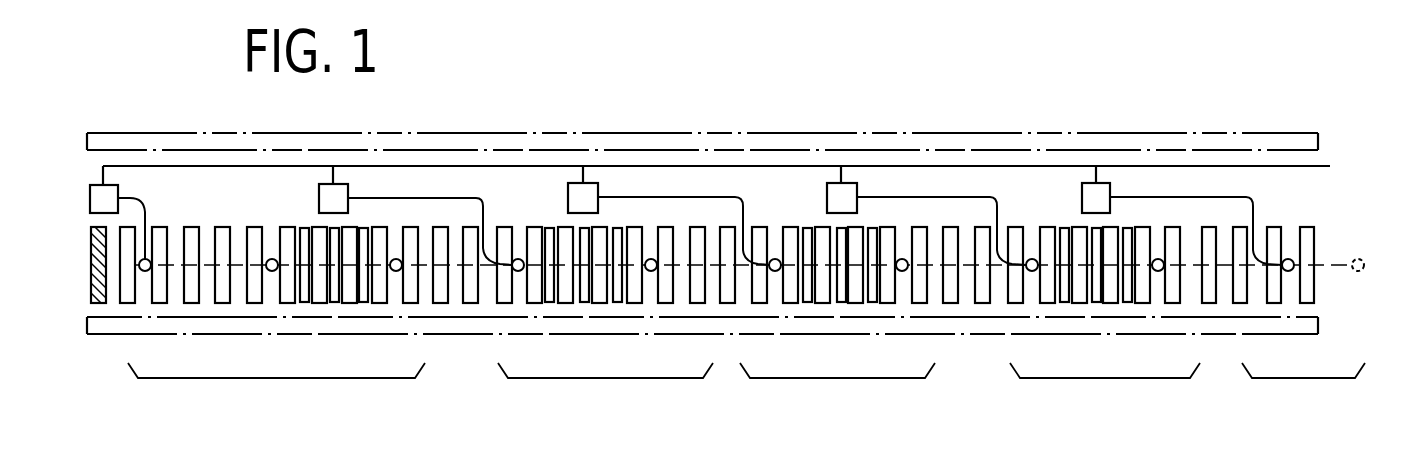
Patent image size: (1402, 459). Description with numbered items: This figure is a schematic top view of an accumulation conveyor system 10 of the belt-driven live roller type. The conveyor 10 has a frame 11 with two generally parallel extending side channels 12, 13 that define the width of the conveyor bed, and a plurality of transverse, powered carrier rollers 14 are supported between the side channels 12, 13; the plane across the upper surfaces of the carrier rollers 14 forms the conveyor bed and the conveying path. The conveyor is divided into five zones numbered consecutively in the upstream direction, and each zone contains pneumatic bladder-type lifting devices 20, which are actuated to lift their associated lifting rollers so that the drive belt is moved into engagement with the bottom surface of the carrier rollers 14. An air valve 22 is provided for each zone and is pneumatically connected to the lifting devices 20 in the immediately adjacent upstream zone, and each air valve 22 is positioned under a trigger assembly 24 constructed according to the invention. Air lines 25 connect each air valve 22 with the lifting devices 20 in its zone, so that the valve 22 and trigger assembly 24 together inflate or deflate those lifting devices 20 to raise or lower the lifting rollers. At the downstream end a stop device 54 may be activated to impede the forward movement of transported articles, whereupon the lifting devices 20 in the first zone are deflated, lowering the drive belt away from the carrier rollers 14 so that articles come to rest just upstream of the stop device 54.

The accumulation conveyor system 10 is at (633, 115).
The frame 11 is at (1340, 307).
The side channel 12 is at (1290, 133).
The side channel 13 is at (1318, 327).
The carrier rollers 14 is at (160, 227).
The pneumatic bladder-type lifting device 20 is at (145, 271).
The air valve 22 is at (110, 185).
The trigger assembly 24 is at (362, 219).
The air lines 25 is at (143, 208).
The stop device 54 is at (93, 282).